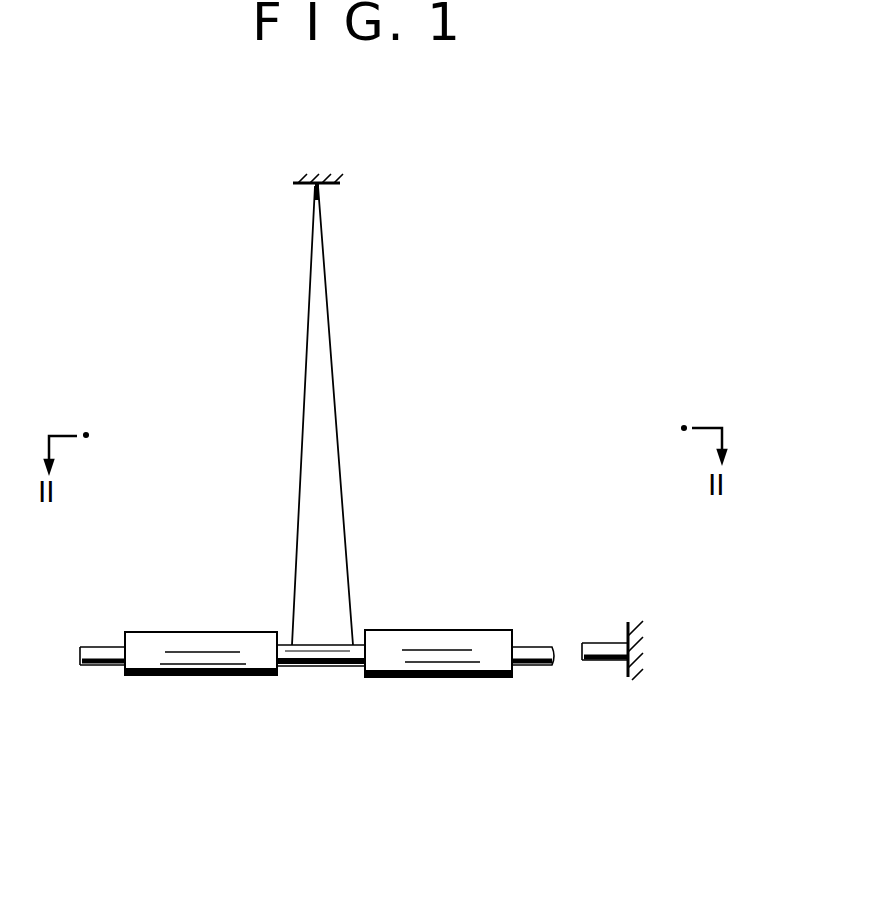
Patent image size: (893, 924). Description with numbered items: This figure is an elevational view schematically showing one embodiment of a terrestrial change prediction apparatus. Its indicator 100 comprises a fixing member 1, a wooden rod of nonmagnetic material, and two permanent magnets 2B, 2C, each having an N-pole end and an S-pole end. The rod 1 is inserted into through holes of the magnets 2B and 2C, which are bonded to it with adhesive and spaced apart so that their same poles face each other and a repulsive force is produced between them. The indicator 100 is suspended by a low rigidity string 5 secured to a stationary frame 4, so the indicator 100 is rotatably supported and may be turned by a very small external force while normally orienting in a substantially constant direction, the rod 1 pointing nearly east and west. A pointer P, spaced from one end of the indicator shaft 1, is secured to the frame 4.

The fixing member 1 is at (323, 668).
The permanent magnet 2B is at (474, 630).
The permanent magnet 2C is at (153, 632).
The stationary frame 4 is at (327, 176).
The low rigidity string 5 is at (332, 368).
The indicator 100 is at (205, 708).
The pointer P is at (600, 661).